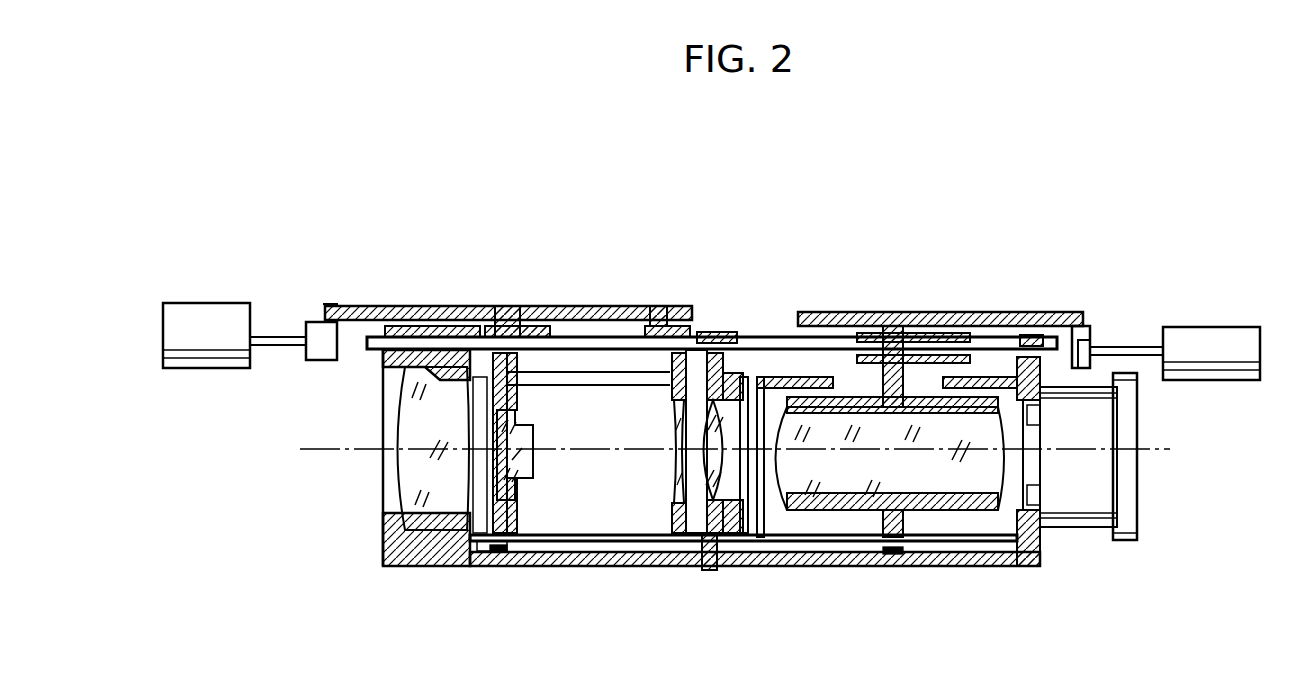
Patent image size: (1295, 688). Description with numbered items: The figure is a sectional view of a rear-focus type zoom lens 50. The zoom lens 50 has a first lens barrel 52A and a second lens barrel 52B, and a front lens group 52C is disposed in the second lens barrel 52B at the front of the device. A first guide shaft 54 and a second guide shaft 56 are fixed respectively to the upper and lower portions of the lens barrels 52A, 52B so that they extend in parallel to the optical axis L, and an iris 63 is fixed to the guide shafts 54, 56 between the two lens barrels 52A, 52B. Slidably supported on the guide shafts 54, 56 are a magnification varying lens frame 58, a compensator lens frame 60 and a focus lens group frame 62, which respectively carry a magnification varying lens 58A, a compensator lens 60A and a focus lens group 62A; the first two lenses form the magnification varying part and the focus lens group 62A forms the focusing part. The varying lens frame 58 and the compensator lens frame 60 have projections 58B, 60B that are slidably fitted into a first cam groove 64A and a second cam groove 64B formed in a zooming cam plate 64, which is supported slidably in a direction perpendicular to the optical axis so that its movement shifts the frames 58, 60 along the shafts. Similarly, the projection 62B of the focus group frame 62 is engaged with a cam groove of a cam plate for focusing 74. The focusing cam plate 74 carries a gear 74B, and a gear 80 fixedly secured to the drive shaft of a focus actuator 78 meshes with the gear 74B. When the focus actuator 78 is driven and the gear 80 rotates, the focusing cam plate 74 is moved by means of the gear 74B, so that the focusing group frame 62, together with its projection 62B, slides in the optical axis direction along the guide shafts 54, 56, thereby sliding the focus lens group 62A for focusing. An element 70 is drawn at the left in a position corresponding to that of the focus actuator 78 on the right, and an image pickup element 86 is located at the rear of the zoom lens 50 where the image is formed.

The zoom lens 50 is at (905, 243).
The first lens barrel 52A is at (938, 566).
The second lens barrel 52B is at (578, 566).
The front lens group 52C is at (400, 515).
The first guide shaft 54 is at (775, 337).
The second guide shaft 56 is at (987, 545).
The magnification varying lens frame 58 is at (565, 326).
The magnification varying lens 58A is at (520, 551).
The projection 58B is at (538, 326).
The compensator lens frame 60 is at (645, 326).
The compensator lens 60A is at (670, 510).
The projection 60B is at (672, 332).
The focus lens group frame 62 is at (855, 312).
The focus lens group 62A is at (805, 510).
The projection 62B is at (892, 333).
The iris 63 is at (745, 570).
The zooming cam plate 64 is at (350, 306).
The first cam groove 64A is at (512, 320).
The second cam groove 64B is at (658, 326).
The first motor 70 is at (205, 318).
The cam plate for focusing 74 is at (980, 312).
The gear 74B is at (1084, 340).
The focus actuator 78 is at (1222, 340).
The gear 80 is at (1093, 347).
The image pickup element 86 is at (1035, 470).
The optical axis L is at (724, 449).